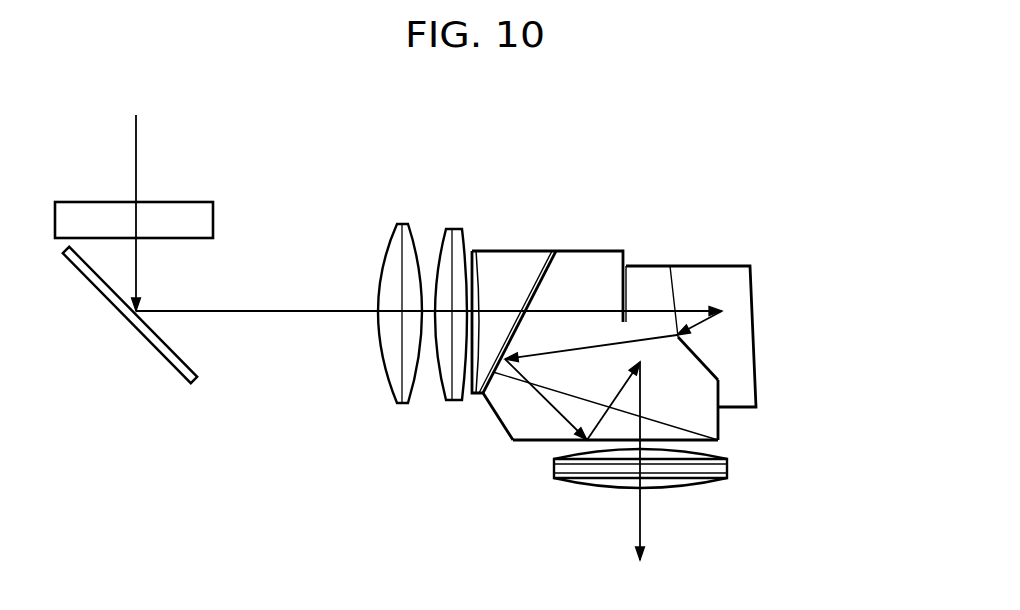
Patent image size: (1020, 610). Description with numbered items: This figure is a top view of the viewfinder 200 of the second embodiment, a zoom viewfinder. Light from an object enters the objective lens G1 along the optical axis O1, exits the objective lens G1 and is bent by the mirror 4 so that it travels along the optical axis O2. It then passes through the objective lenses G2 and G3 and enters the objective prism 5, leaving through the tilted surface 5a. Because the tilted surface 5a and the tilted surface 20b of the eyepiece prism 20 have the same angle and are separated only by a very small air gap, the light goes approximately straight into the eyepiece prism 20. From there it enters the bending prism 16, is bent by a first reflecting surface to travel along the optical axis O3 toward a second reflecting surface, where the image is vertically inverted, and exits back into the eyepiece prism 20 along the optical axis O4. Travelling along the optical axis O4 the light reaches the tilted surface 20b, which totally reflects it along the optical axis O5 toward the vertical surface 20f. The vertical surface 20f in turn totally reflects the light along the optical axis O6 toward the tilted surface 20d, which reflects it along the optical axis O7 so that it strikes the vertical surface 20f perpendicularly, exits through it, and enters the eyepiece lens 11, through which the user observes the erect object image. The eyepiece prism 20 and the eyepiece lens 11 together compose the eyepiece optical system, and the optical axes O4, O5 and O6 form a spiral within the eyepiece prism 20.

The viewfinder 200 is at (306, 114).
The optical axis O1 is at (136, 145).
The objective lens G1 is at (213, 218).
The mirror 4 is at (87, 282).
The optical axis O2 is at (260, 313).
The objective lens G2 is at (400, 373).
The objective lens G3 is at (458, 400).
The tilted surface 5a is at (518, 328).
The objective prism 5 is at (483, 397).
The eyepiece prism 20 is at (707, 365).
The tilted surface 20b is at (538, 287).
The tilted surface 20d is at (698, 389).
The vertical surface 20f is at (542, 443).
The bending prism 16 is at (732, 288).
The optical axis O3 is at (698, 328).
The optical axis O4 is at (600, 343).
The optical axis O5 is at (550, 408).
The optical axis O6 is at (616, 398).
The optical axis O7 is at (645, 525).
The eyepiece lens 11 is at (727, 470).